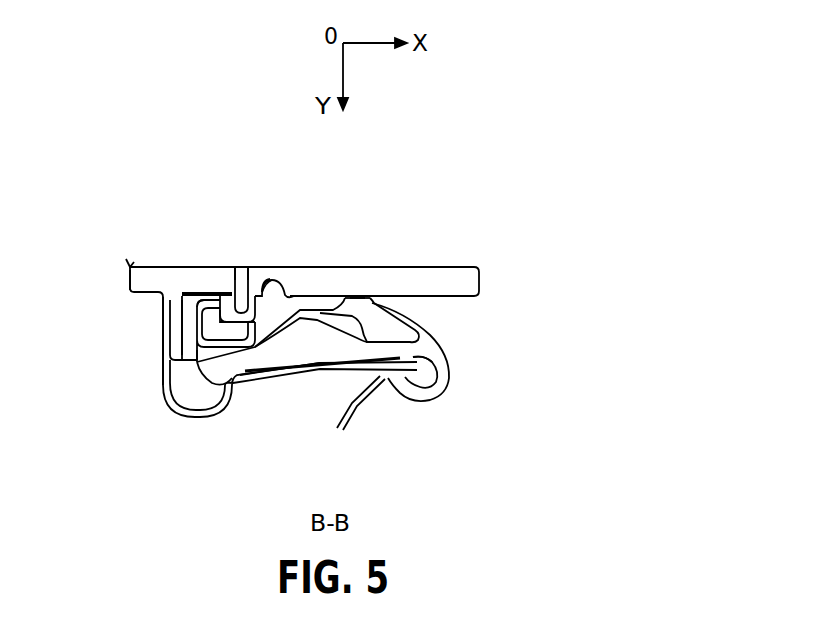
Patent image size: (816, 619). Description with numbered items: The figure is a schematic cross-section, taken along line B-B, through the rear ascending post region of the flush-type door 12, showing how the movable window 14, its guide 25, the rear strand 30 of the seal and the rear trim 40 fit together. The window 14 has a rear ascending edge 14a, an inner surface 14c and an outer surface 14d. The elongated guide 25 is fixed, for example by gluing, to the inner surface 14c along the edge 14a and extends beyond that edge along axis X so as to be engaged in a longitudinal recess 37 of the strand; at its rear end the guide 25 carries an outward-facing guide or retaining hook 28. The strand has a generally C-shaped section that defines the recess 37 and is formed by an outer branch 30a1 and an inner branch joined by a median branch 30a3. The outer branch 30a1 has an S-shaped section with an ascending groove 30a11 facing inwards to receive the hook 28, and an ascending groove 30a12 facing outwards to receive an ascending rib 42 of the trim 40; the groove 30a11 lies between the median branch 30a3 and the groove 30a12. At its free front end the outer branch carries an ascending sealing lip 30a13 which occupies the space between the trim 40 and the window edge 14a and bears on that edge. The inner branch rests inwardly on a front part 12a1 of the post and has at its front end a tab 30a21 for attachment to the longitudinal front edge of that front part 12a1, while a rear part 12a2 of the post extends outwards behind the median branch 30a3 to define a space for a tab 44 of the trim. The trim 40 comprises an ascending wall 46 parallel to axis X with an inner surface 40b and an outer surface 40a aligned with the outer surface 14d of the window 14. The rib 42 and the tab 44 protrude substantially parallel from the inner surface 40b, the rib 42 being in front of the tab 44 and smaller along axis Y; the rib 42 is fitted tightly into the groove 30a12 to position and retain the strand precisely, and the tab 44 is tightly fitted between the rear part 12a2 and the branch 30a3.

The rear trim 40 is at (183, 267).
The outer surface 40a is at (150, 267).
The inner surface 40b is at (177, 300).
The tab 44 is at (124, 296).
The movable window 14 is at (457, 267).
The rear ascending edge 14a is at (289, 268).
The inner surface 14c is at (462, 300).
The outer surface 14d is at (455, 267).
The ascending wall 46 is at (275, 267).
The ascending rib 42 is at (241, 267).
The guide and/or retaining hook 28 is at (248, 300).
The guide 25 is at (361, 296).
The strand 30 is at (258, 372).
The outer branch 30a1 is at (218, 296).
The median branch 30a3 is at (188, 343).
The ascending groove 30a11 is at (197, 326).
The ascending groove 30a12 is at (273, 270).
The ascending sealing lip 30a13 is at (320, 296).
The tab 30a21 is at (410, 400).
The longitudinal recess 37 is at (222, 352).
The door 12 is at (170, 411).
The front part 12a1 is at (325, 369).
The rear part 12a2 is at (160, 372).